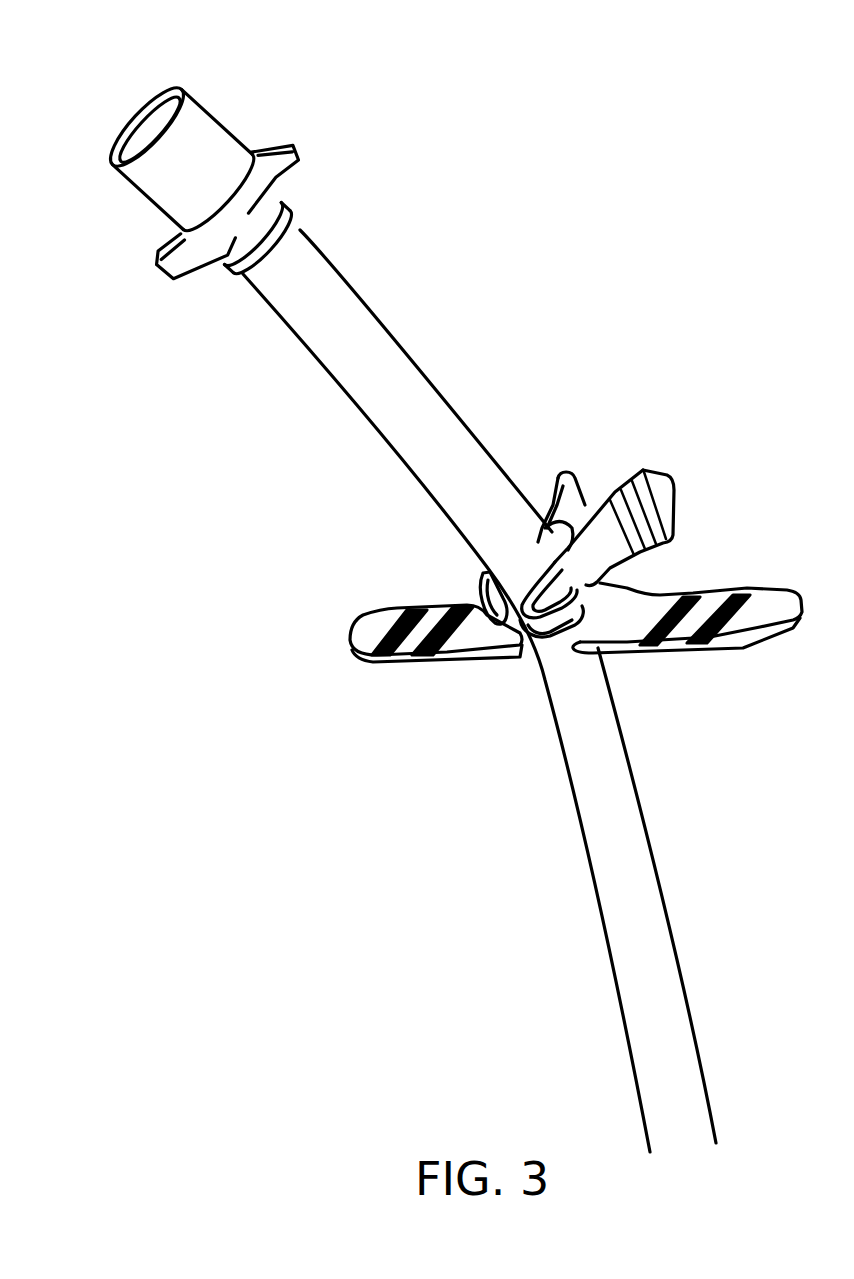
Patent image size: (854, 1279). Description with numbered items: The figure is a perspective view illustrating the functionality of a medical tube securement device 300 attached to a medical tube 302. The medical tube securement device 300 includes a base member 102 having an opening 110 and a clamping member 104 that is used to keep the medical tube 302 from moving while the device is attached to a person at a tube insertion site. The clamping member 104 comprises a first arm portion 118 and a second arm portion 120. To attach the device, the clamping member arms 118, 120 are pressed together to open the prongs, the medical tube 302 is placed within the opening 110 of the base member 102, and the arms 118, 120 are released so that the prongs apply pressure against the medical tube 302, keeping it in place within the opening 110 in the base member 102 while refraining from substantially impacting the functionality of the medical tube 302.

The medical tube securement device 300 is at (113, 62).
The medical tube 302 is at (352, 400).
The base member 102 is at (382, 696).
The clamping member 104 is at (621, 473).
The opening 110 is at (527, 655).
The first arm portion 118 is at (673, 478).
The second arm portion 120 is at (563, 478).